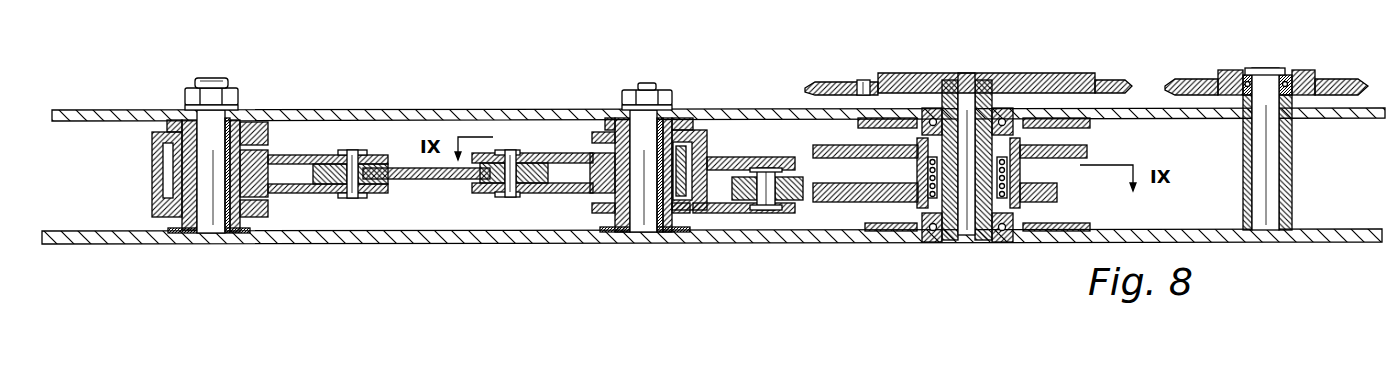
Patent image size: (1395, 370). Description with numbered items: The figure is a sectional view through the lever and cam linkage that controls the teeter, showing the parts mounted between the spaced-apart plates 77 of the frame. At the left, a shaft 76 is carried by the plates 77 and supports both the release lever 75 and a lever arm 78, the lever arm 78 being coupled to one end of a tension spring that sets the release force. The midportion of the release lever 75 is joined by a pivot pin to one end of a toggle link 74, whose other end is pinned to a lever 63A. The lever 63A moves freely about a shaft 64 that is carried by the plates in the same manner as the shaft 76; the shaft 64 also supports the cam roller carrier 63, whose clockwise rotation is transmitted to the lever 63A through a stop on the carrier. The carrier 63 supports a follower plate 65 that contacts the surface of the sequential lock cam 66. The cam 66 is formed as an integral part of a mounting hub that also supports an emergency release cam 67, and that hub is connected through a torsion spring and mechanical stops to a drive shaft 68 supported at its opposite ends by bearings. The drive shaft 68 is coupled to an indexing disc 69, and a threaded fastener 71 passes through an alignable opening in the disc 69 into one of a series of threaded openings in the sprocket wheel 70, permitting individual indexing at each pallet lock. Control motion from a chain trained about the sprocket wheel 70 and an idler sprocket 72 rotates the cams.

The cam roller carrier 63 is at (703, 218).
The lever 63A is at (553, 193).
The shaft 64 is at (648, 83).
The follower plate 65 is at (803, 200).
The sequential lock cam 66 is at (1062, 190).
The emergency release cam 67 is at (820, 150).
The drive shaft 68 is at (945, 240).
The indexing disc 69 is at (895, 75).
The sprocket wheel 70 is at (1100, 78).
The threaded fastener 71 is at (862, 80).
The idler sprocket 72 is at (1330, 78).
The toggle link 74 is at (430, 180).
The release lever 75 is at (310, 195).
The shaft 76 is at (213, 80).
The plates 77 is at (1085, 240).
The lever arm 78 is at (152, 173).